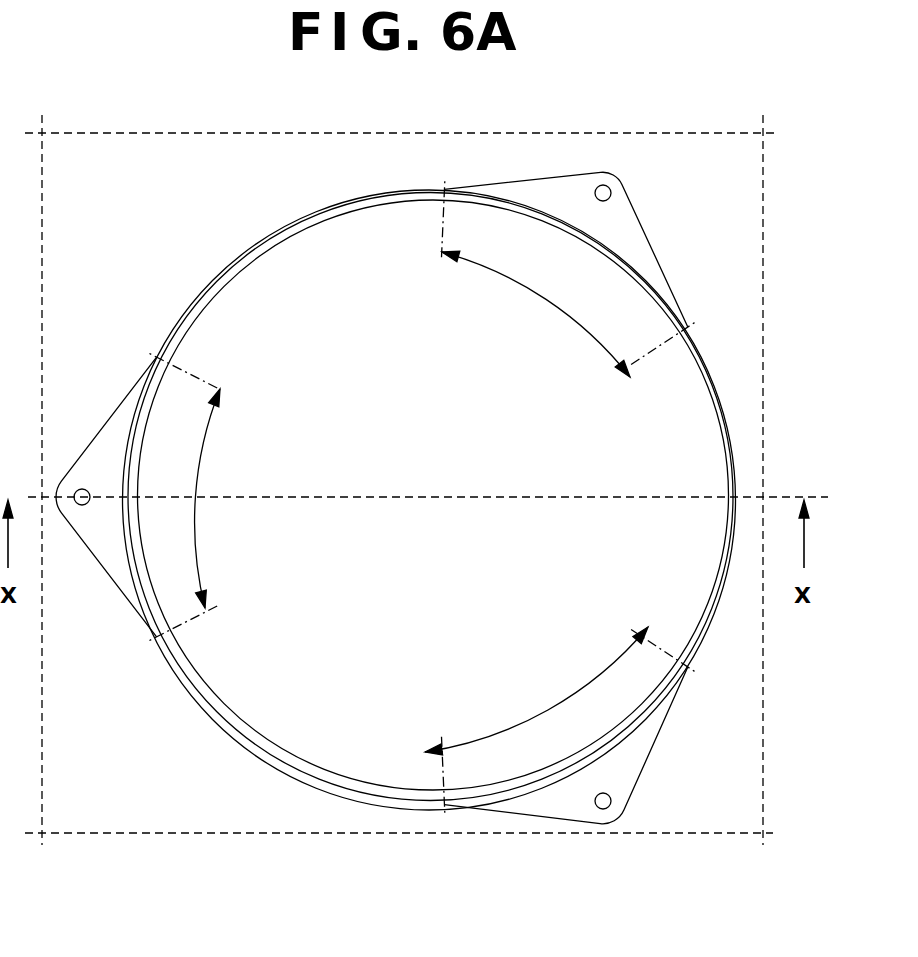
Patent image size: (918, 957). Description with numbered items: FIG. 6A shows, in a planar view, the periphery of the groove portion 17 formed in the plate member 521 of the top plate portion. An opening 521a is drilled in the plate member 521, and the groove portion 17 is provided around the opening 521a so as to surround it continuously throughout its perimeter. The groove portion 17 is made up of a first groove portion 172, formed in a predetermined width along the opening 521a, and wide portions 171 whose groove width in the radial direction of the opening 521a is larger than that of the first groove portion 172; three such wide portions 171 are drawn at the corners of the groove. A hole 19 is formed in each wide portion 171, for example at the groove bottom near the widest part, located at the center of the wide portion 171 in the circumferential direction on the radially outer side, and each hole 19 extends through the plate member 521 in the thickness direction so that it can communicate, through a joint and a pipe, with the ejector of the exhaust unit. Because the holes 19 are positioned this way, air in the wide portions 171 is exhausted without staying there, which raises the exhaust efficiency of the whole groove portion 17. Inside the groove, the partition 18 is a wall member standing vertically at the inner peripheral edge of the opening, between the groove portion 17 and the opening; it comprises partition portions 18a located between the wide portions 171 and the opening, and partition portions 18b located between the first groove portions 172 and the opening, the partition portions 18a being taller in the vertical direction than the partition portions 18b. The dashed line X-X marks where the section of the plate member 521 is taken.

The groove portion 17 is at (438, 497).
The wide portion (second groove portion) 171 is at (118, 430).
The first groove portion 172 is at (233, 255).
The partition 18 is at (327, 216).
The partition portion 18a is at (421, 496).
The partition portion 18b is at (218, 290).
The hole 19 is at (82, 488).
The plate member 521 is at (715, 830).
The opening 521a is at (368, 775).